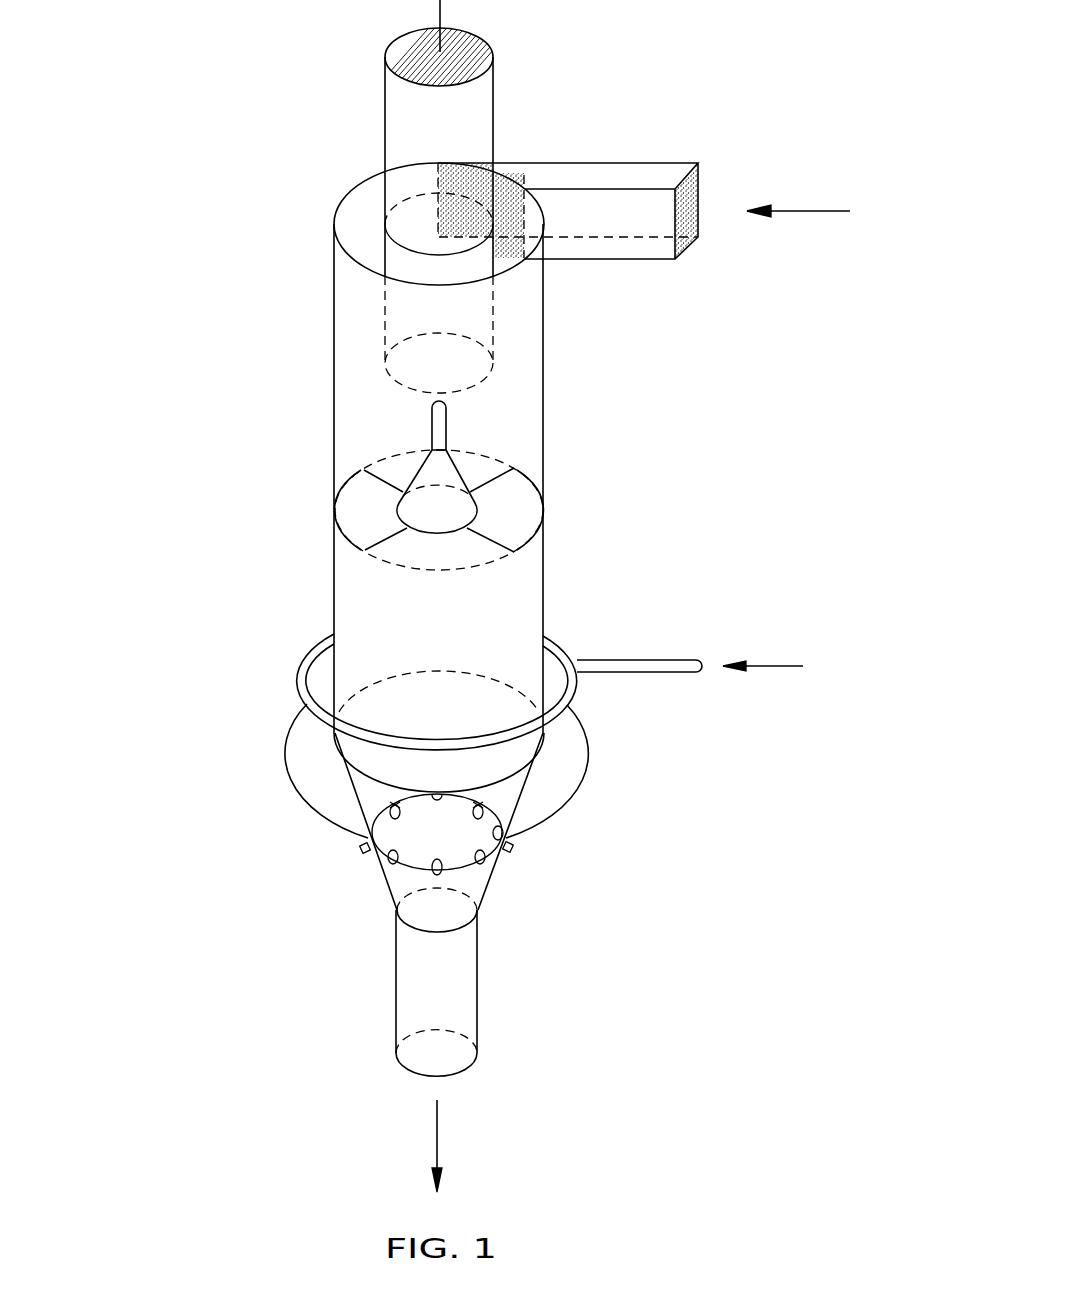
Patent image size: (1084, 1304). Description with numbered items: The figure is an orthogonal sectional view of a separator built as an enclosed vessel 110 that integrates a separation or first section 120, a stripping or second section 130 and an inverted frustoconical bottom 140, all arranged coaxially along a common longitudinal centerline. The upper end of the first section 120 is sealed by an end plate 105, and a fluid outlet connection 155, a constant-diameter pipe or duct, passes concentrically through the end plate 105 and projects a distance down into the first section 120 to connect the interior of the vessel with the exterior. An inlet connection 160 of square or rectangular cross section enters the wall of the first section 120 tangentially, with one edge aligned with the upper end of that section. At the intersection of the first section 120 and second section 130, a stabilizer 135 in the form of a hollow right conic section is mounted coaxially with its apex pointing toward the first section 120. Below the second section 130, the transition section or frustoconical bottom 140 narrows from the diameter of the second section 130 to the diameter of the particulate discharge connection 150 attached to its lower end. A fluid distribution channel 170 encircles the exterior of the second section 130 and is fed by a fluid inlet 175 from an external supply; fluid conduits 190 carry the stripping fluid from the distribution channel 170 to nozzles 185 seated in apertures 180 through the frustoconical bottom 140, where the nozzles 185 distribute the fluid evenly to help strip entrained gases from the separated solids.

The end plate 105 is at (333, 232).
The enclosed vessel 110 is at (340, 205).
The first section 120 is at (333, 355).
The second section 130 is at (333, 560).
The stabilizer 135 is at (480, 510).
The inverted frustoconical bottom 140 is at (383, 880).
The particulate discharge connection 150 is at (477, 980).
The fluid outlet connection 155 is at (385, 82).
The inlet connection 160 is at (622, 163).
The fluid distribution channel 170 is at (302, 657).
The fluid inlet 175 is at (650, 658).
The aperture 180 is at (500, 823).
The nozzle 185 is at (510, 850).
The fluid conduit 190 is at (285, 757).